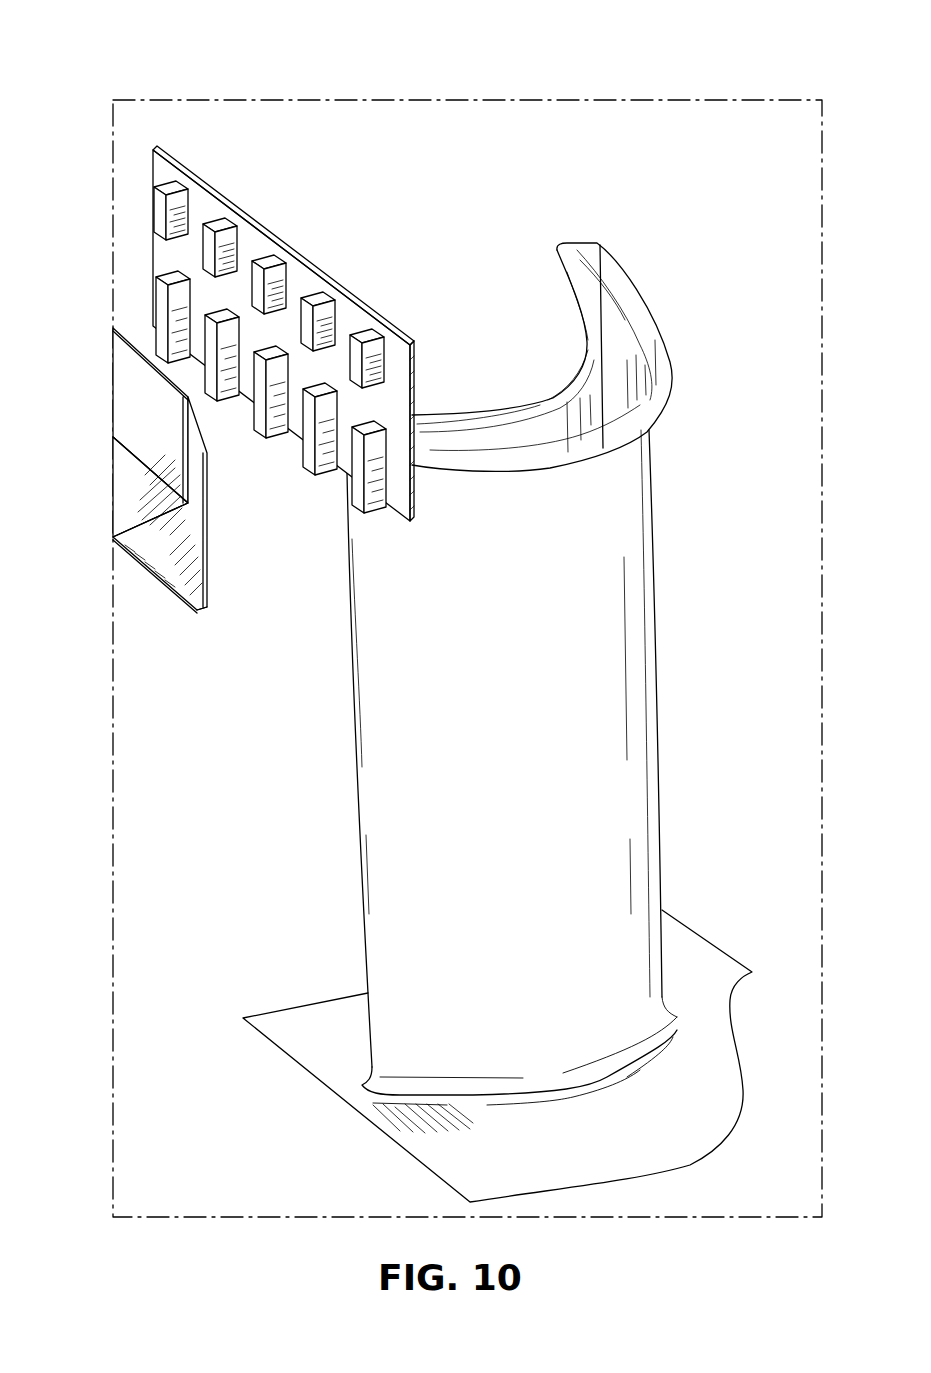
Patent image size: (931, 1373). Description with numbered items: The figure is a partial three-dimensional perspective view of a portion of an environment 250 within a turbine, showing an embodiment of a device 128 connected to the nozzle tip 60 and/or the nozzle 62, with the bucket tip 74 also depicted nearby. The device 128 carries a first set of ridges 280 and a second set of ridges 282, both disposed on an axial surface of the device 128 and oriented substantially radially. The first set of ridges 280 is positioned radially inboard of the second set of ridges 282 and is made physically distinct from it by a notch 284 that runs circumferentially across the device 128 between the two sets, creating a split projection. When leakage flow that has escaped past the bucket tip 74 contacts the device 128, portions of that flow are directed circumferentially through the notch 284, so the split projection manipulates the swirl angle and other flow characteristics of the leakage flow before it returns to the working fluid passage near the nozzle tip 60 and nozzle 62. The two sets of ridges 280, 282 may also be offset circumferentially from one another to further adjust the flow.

The environment 250 is at (92, 82).
The device 128 is at (257, 237).
The second set of ridges 282 is at (207, 248).
The first set of ridges 280 is at (160, 294).
The bucket tip 74 is at (127, 418).
The nozzle tip 60 is at (550, 392).
The nozzle 62 is at (495, 797).
The notch 284 is at (378, 420).